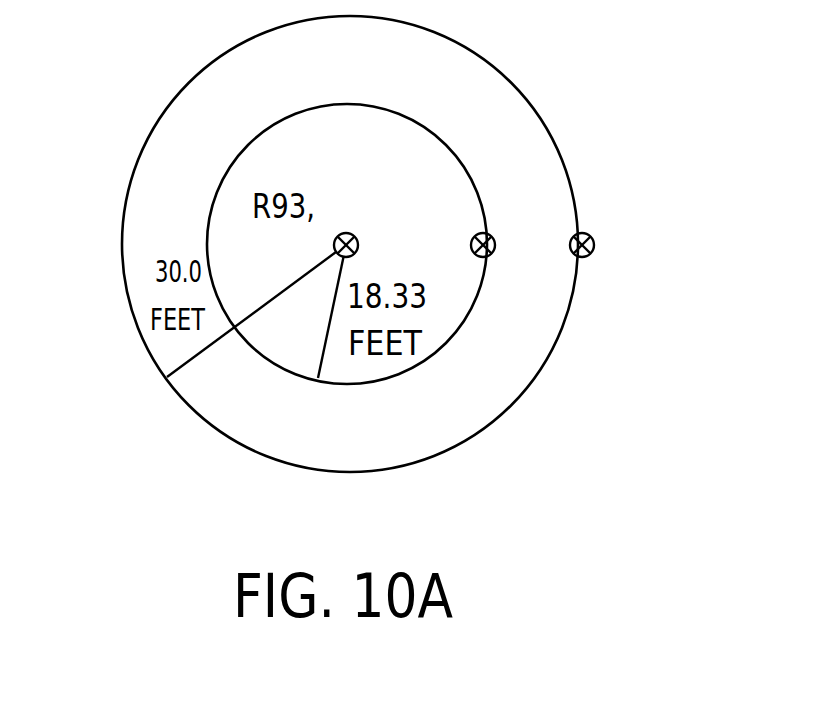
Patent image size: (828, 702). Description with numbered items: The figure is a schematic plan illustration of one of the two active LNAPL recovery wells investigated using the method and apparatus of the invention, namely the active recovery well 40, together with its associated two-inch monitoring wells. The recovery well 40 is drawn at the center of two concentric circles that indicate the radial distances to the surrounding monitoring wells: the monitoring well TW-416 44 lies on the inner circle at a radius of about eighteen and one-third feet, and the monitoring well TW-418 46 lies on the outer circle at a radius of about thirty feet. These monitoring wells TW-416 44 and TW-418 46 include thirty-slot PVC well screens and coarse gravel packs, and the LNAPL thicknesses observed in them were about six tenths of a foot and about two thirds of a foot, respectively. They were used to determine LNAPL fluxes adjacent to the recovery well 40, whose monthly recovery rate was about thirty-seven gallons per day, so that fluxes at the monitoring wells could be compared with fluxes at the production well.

The active recovery well R-93 40 is at (337, 239).
The monitoring well TW-416 44 is at (572, 199).
The monitoring well TW-418 46 is at (649, 236).
The monitoring well TW-416 is at (493, 233).
The monitoring well TW-418 is at (594, 242).